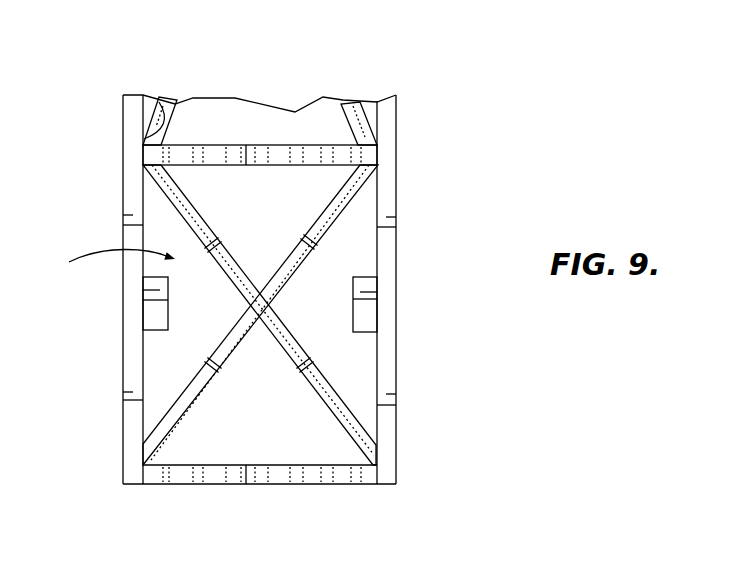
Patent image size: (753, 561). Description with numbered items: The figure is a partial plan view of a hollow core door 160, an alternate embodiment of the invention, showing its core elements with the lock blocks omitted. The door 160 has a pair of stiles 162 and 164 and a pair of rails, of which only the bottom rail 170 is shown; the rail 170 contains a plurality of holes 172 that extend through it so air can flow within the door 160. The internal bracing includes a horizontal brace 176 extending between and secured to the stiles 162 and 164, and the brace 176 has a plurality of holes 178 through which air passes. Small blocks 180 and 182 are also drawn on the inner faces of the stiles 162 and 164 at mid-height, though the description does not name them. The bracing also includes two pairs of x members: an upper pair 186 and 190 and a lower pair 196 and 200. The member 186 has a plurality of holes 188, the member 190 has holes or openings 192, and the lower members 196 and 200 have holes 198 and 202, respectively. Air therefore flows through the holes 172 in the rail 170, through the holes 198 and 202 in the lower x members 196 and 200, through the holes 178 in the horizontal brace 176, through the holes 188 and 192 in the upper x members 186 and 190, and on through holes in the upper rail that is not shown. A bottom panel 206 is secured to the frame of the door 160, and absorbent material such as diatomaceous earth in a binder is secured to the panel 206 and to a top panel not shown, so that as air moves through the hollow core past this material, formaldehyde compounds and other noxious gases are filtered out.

The hollow core door 160 is at (460, 142).
The stile 162 is at (394, 192).
The stile 164 is at (121, 225).
The bottom rail 170 is at (190, 482).
The holes 172 is at (305, 482).
The horizontal brace 176 is at (188, 143).
The holes 178 is at (207, 160).
The right bracket 180 is at (365, 313).
The left bracket 182 is at (150, 313).
The upper x member 186 is at (358, 133).
The holes 188 is at (353, 105).
The upper x member 190 is at (148, 105).
The holes or openings 192 is at (141, 137).
The lower x member 196 is at (335, 388).
The holes 198 is at (358, 430).
The lower x member 200 is at (172, 393).
The holes 202 is at (160, 412).
The bottom panel 206 is at (103, 260).